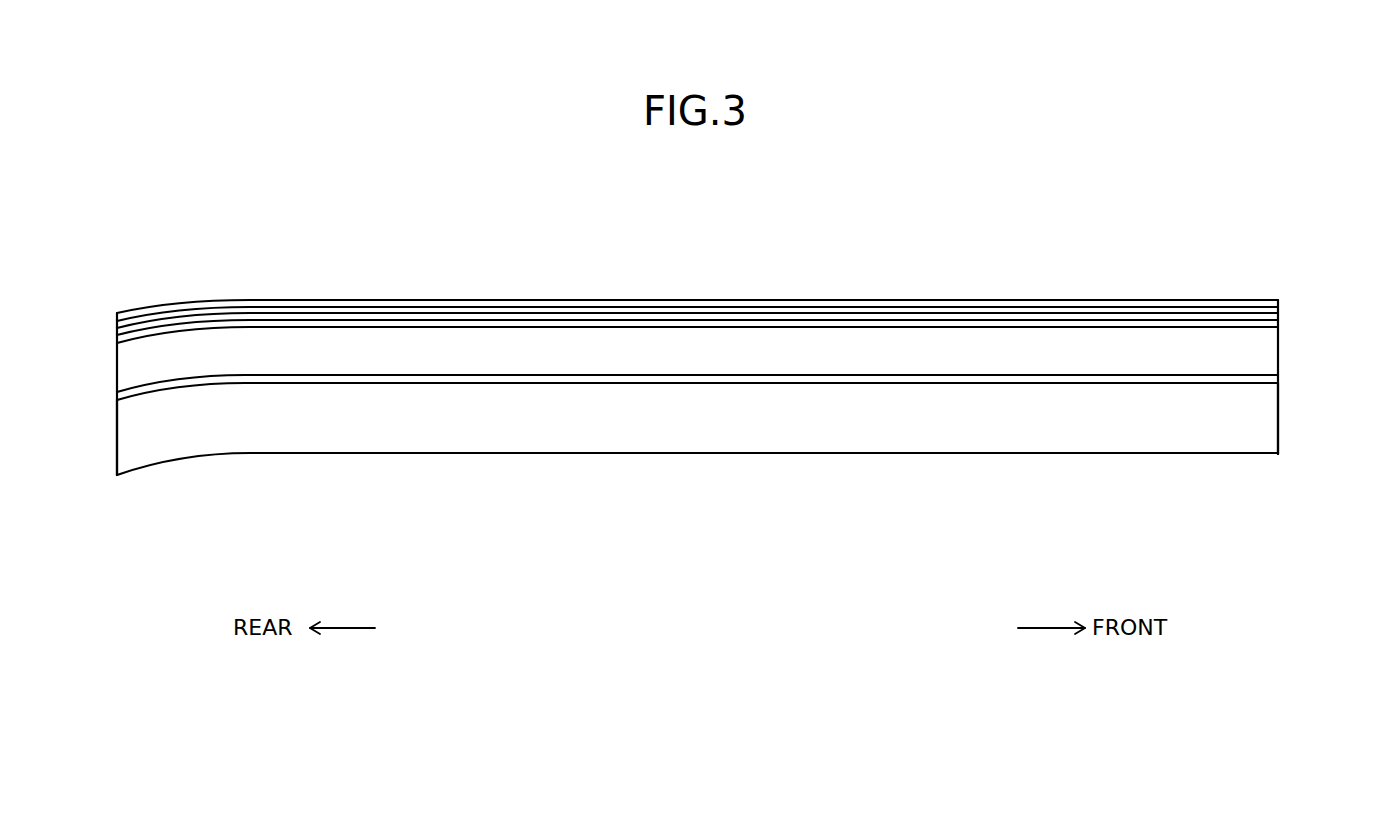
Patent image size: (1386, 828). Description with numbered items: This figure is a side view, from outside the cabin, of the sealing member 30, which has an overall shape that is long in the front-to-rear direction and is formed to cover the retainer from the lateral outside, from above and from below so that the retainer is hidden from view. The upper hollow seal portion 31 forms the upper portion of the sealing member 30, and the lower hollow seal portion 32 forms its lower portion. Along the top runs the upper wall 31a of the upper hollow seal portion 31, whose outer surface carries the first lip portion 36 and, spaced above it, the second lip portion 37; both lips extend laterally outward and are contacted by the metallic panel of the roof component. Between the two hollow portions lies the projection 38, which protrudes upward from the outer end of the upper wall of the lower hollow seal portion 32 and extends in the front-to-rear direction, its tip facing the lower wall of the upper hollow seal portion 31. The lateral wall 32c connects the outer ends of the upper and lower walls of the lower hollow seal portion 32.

The sealing member 30 is at (1278, 343).
The upper hollow seal portion 31 is at (732, 348).
The upper wall 31a is at (423, 342).
The first lip portion 36 is at (515, 310).
The second lip portion 37 is at (600, 300).
The projection 38 is at (918, 382).
The lower hollow seal portion 32 is at (782, 432).
The lateral wall 32c is at (958, 432).